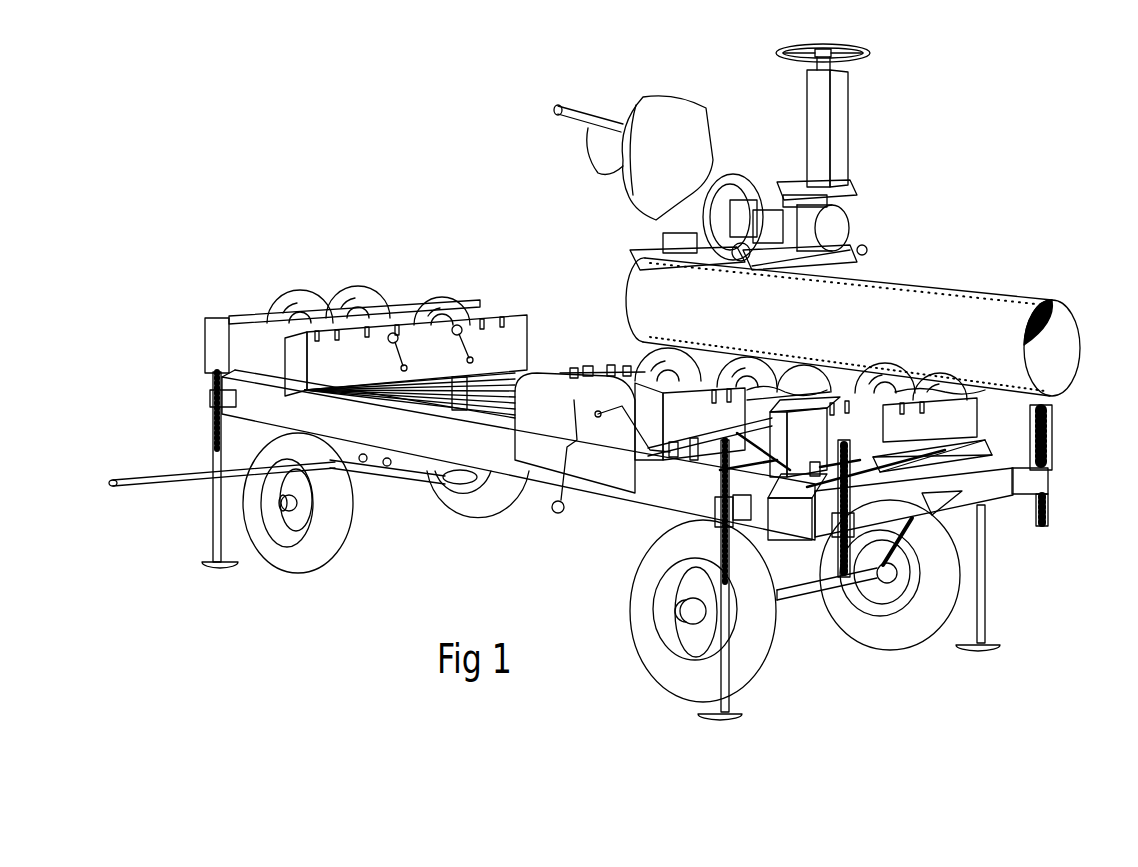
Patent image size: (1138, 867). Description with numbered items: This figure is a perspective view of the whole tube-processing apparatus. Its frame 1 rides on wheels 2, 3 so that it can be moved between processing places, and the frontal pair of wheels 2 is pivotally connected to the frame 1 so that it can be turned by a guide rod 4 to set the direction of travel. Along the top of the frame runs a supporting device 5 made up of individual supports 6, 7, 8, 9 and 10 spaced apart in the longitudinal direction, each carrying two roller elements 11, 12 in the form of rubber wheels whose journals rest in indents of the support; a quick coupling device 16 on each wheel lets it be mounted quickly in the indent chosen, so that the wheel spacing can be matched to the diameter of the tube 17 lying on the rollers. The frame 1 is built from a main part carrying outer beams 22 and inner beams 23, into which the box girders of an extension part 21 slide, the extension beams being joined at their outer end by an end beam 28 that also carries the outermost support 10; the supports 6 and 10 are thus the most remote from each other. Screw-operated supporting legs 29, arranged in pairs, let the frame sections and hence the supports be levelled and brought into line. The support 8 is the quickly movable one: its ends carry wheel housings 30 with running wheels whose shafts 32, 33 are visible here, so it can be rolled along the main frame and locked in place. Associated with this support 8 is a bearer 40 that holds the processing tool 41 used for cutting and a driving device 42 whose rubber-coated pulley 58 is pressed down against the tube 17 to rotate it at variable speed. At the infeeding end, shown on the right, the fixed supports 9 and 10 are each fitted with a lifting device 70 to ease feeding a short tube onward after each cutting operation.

The frame 1 is at (612, 505).
The frontal pair of wheels 2 is at (323, 557).
The wheels 3 is at (745, 675).
The guide rod 4 is at (180, 472).
The supporting device 5 is at (346, 326).
The support 6 is at (210, 330).
The support 7 is at (507, 320).
The support 8 is at (597, 360).
The support 9 is at (650, 472).
The support 10 is at (1053, 412).
The roller element 11 is at (387, 300).
The roller element 12 is at (447, 300).
The quick coupling device 16 is at (407, 350).
The tube 17 is at (950, 300).
The extension part 21 is at (781, 520).
The outer beams 22 is at (315, 423).
The inner beams 23 is at (347, 392).
The end beam 28 is at (1000, 497).
The screw-operated supporting legs 29 is at (210, 515).
The wheel housing 30 is at (553, 380).
The shaft 32 is at (531, 404).
The shaft 33 is at (603, 421).
The bearer 40 is at (744, 151).
The processing tool 41 is at (627, 95).
The driving device 42 is at (768, 173).
The pulley 58 is at (730, 172).
The lifting device 70 is at (728, 414).